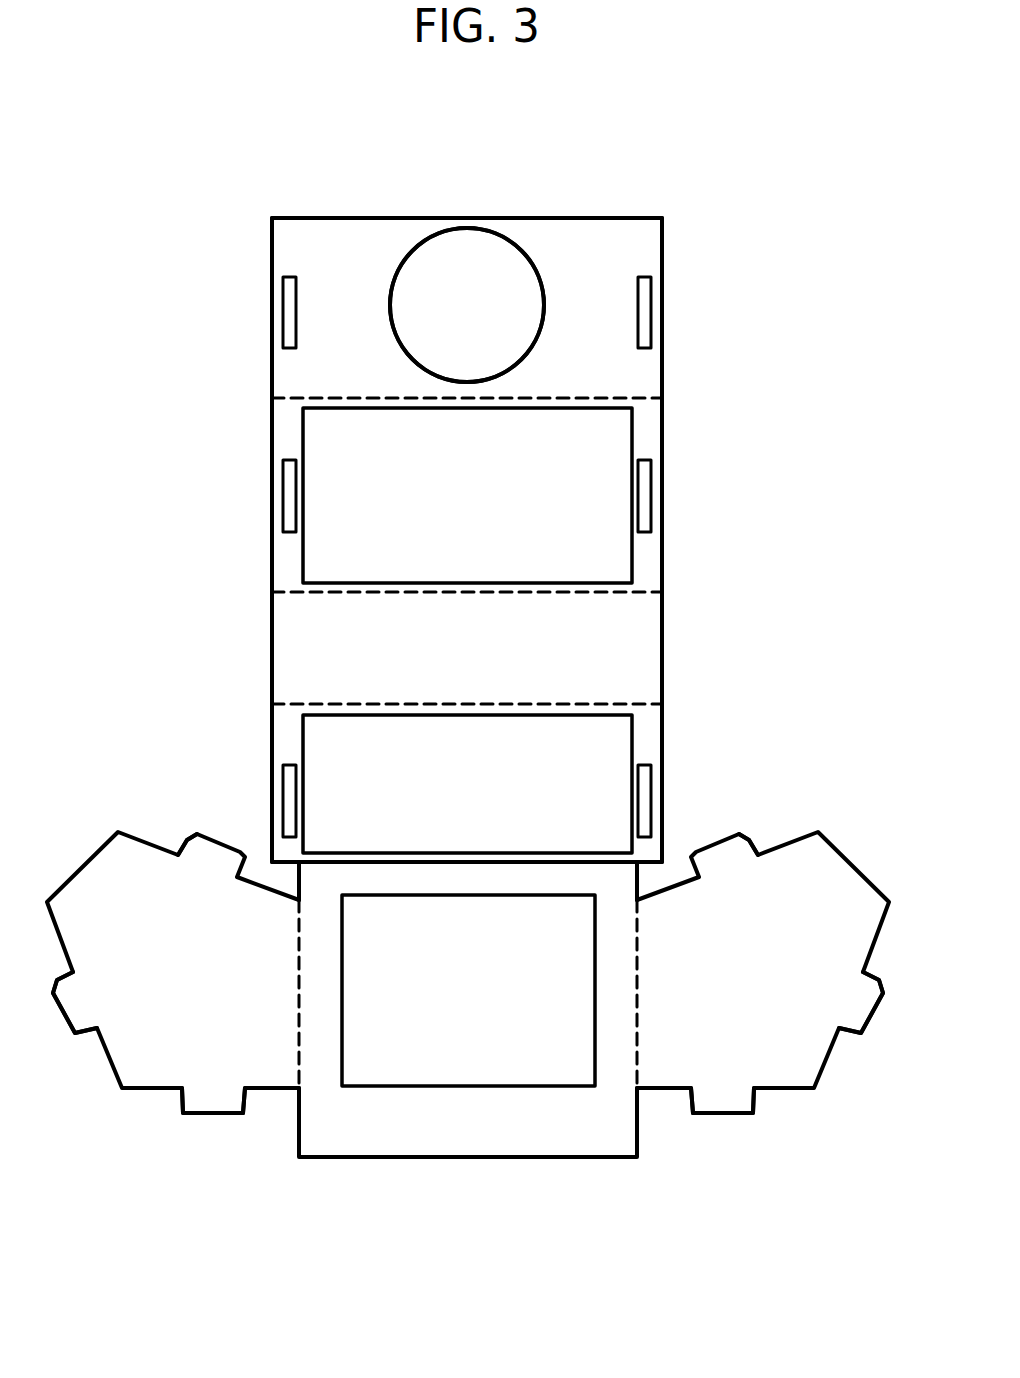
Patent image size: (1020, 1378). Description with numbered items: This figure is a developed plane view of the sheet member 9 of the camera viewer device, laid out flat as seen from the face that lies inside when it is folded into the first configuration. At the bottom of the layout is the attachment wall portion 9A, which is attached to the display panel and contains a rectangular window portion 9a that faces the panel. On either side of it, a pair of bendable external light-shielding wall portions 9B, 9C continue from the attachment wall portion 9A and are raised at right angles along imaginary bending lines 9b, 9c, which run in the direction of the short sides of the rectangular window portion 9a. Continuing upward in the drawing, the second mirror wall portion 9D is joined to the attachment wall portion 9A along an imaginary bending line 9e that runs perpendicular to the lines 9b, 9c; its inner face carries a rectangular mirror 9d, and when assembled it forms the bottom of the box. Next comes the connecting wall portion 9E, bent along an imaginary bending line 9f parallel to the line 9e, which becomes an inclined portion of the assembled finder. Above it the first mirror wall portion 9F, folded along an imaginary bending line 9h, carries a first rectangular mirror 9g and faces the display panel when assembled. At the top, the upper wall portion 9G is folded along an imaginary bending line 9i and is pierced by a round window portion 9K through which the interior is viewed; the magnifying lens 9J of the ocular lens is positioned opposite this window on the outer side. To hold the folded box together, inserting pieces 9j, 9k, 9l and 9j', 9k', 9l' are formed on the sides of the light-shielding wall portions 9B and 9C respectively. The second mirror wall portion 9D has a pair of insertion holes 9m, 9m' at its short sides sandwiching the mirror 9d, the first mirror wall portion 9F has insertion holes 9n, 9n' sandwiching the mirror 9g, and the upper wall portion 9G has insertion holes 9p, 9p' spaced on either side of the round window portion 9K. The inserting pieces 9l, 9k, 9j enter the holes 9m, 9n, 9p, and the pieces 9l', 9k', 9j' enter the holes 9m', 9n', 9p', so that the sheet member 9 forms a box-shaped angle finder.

The sheet member 9 is at (254, 599).
The attachment wall portion 9A is at (535, 1148).
The external light-shielding wall portion 9B is at (847, 868).
The external light-shielding wall portion 9C is at (141, 1088).
The second mirror wall portion 9D is at (660, 736).
The connecting wall portion 9E is at (660, 660).
The first mirror wall portion 9F is at (275, 436).
The upper wall portion 9G is at (335, 230).
The round window portion 9K is at (467, 230).
The magnifying lens 9J is at (467, 305).
The rectangular window portion 9a is at (466, 1086).
The imaginary bending line 9b is at (640, 984).
The imaginary bending line 9c is at (297, 990).
The rectangular mirror 9d is at (335, 712).
The imaginary bending line 9e is at (475, 852).
The imaginary bending line 9f is at (475, 702).
The first rectangular mirror 9g is at (335, 408).
The imaginary bending line 9h is at (475, 583).
The imaginary bending line 9i is at (596, 396).
The inserting piece 9j is at (722, 1130).
The inserting piece 9j' is at (213, 1130).
The inserting piece 9k is at (861, 1032).
The inserting piece 9k' is at (75, 1032).
The inserting piece 9l is at (766, 832).
The inserting piece 9l' is at (170, 830).
The insertion hole 9m is at (681, 801).
The insertion hole 9m' is at (254, 801).
The insertion hole 9n is at (678, 496).
The insertion hole 9n' is at (257, 496).
The insertion hole 9p is at (678, 312).
The insertion hole 9p' is at (257, 312).